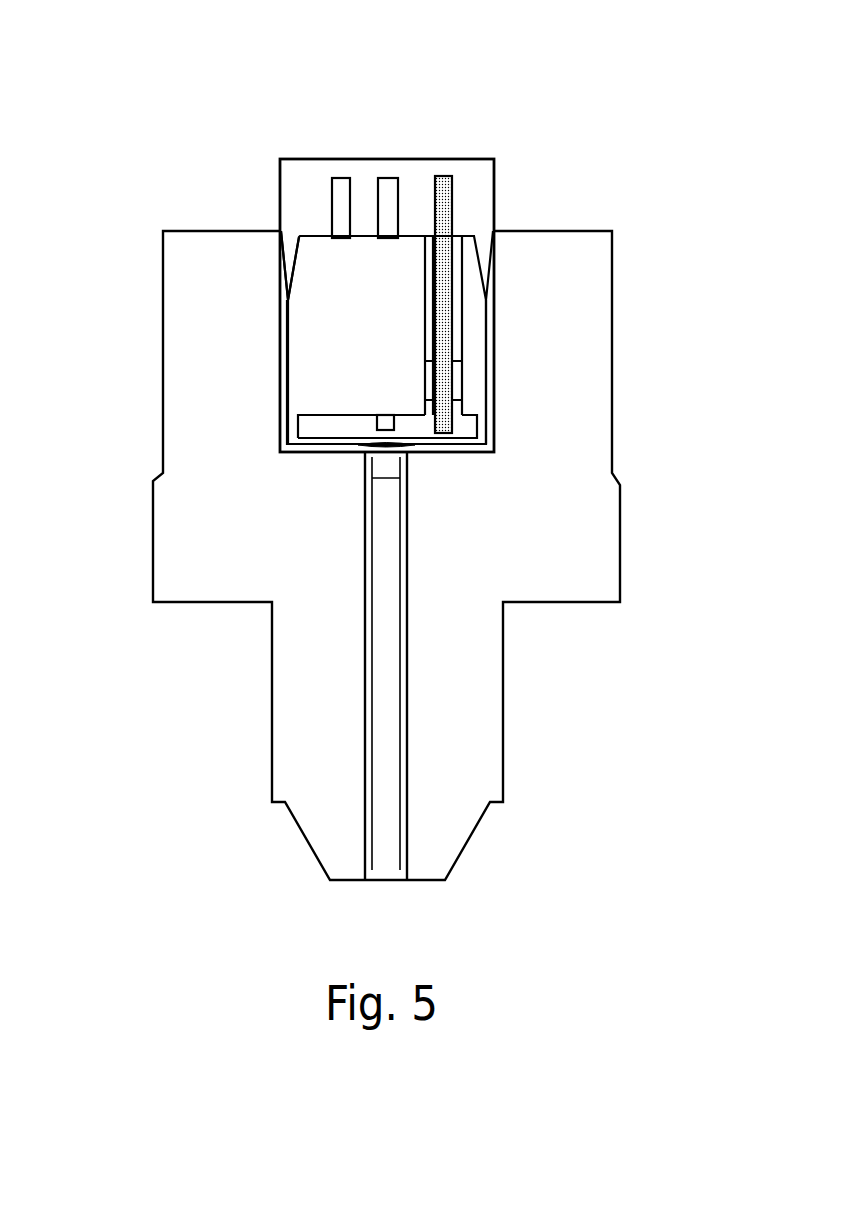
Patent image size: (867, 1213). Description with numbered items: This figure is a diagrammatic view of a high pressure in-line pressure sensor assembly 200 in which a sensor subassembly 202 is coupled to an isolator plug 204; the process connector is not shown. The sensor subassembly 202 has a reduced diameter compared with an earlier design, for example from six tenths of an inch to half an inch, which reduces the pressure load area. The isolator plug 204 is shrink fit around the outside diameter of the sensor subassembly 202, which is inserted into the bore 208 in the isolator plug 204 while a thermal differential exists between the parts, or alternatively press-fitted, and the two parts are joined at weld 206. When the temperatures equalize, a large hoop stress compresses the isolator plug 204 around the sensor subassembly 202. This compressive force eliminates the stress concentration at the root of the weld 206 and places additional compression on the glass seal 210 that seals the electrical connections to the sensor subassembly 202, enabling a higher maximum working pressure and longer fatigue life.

The assembly 200 is at (628, 104).
The sensor subassembly 202 is at (507, 298).
The isolator plug 204 is at (624, 411).
The weld 206 is at (270, 257).
The bore 208 is at (495, 348).
The glass seal 210 is at (476, 383).